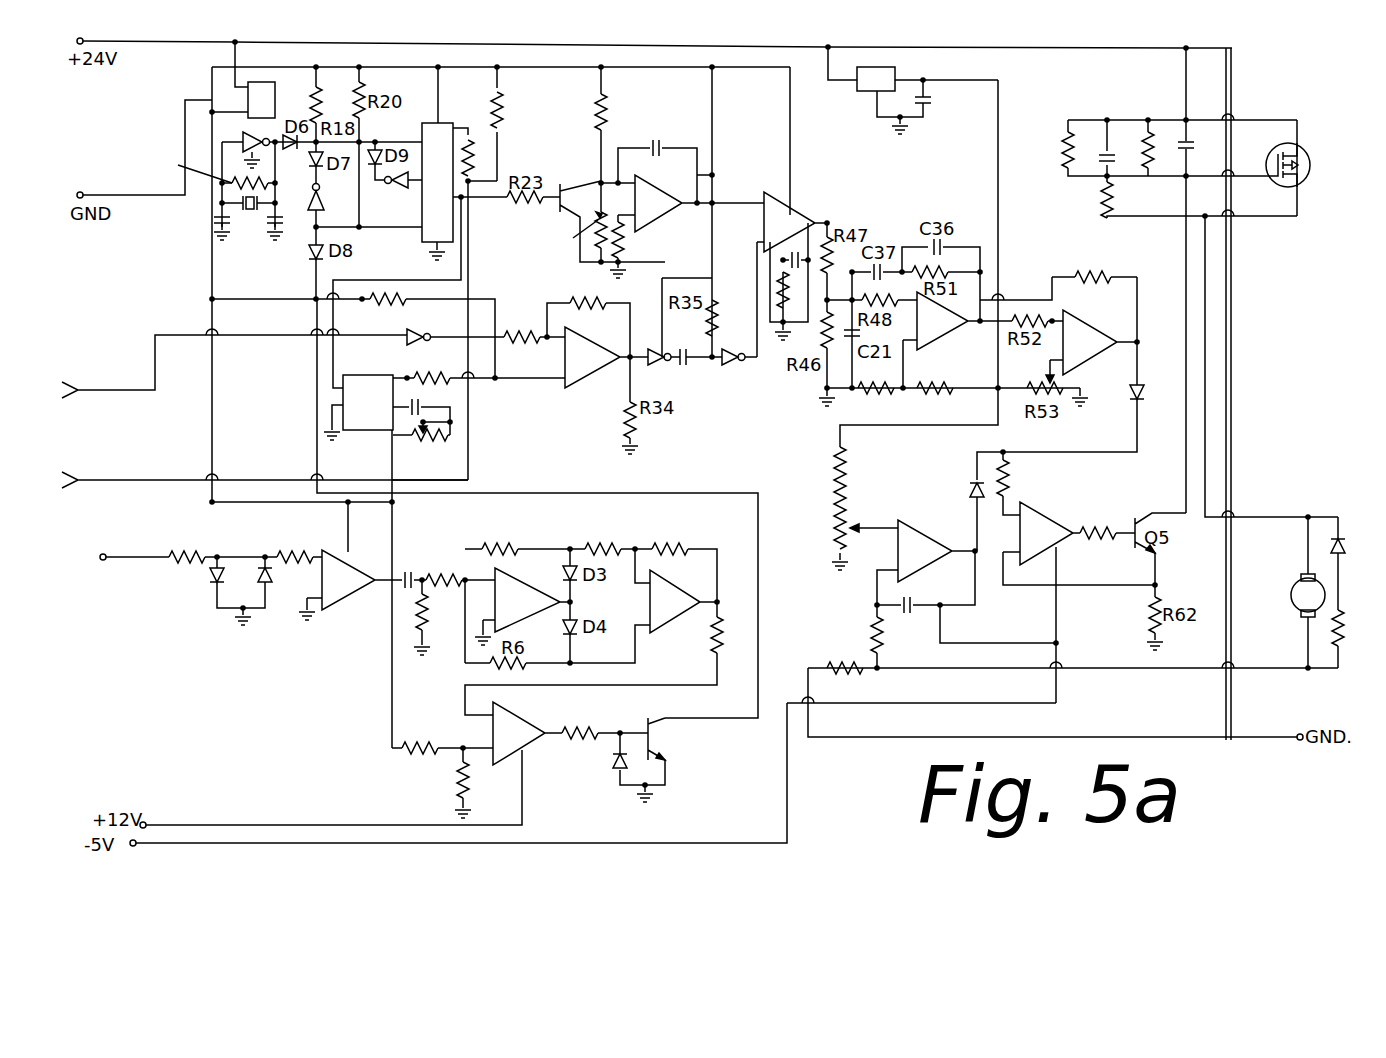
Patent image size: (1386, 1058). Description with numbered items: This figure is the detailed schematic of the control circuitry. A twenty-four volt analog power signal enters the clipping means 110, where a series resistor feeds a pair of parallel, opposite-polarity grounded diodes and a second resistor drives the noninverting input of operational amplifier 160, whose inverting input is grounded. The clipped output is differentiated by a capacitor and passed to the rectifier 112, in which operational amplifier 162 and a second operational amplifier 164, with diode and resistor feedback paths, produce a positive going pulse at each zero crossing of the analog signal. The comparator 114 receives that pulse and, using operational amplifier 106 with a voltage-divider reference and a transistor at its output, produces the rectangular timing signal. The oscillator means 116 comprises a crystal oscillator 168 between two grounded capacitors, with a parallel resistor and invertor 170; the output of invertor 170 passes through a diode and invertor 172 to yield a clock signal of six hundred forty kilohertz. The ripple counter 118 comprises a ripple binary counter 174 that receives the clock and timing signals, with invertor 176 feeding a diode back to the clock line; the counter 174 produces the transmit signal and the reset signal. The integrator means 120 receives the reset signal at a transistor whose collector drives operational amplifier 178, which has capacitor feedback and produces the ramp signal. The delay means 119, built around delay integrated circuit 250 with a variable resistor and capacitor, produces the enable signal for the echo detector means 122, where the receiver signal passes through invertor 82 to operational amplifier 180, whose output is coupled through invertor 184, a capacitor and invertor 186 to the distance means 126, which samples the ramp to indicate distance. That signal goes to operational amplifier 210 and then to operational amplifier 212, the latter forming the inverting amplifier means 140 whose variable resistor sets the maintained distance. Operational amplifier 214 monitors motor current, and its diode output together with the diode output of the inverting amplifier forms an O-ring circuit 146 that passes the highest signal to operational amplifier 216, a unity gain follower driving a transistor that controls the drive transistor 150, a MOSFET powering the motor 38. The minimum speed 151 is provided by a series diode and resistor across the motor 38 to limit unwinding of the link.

The motor 38 is at (1297, 587).
The inverter 82 is at (413, 342).
The operational amplifier 106 is at (490, 727).
The clipping means 110 is at (273, 626).
The rectifier 112 is at (547, 538).
The comparator 114 is at (541, 765).
The oscillator means 116 is at (210, 206).
The ripple counter 118 is at (455, 85).
The delay means 119 is at (307, 372).
The integrator means 120 is at (660, 90).
The echo detector means 122 is at (557, 385).
The distance means 126 is at (810, 208).
The inverting amplifier means 140 is at (1147, 317).
The O-ring circuit 146 is at (1007, 452).
The drive transistor 150 is at (1343, 117).
The minimum speed 151 is at (1313, 512).
The operational amplifier 160 is at (335, 608).
The operational amplifier 162 is at (507, 600).
The second operational amplifier 164 is at (667, 608).
The crystal oscillator 168 is at (254, 212).
The invertor 170 is at (240, 140).
The invertor 172 is at (305, 200).
The ripple binary counter 174 is at (432, 232).
The invertor 176 is at (386, 186).
The operational amplifier 178 is at (668, 220).
The operational amplifier 180 is at (580, 365).
The invertor 184 is at (659, 368).
The invertor 186 is at (735, 368).
The operational amplifier 210 is at (936, 322).
The operational amplifier 212 is at (1078, 345).
The operational amplifier 214 is at (912, 546).
The operational amplifier 216 is at (1035, 532).
The delay integrated circuit 250 is at (365, 410).